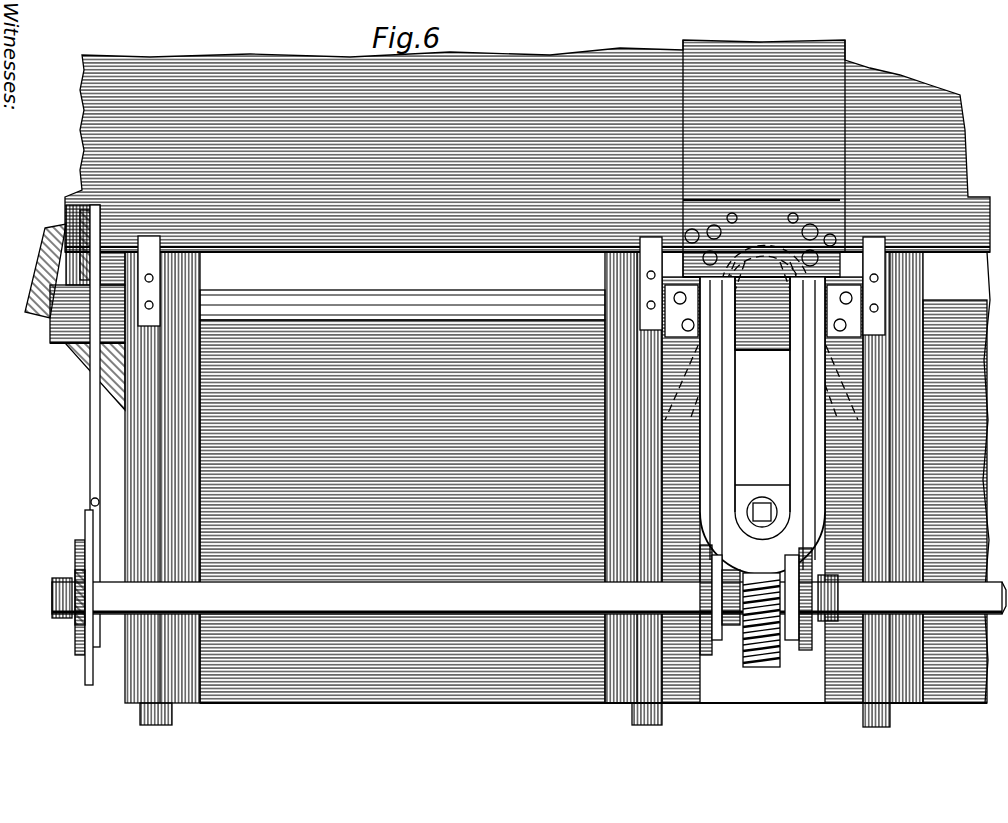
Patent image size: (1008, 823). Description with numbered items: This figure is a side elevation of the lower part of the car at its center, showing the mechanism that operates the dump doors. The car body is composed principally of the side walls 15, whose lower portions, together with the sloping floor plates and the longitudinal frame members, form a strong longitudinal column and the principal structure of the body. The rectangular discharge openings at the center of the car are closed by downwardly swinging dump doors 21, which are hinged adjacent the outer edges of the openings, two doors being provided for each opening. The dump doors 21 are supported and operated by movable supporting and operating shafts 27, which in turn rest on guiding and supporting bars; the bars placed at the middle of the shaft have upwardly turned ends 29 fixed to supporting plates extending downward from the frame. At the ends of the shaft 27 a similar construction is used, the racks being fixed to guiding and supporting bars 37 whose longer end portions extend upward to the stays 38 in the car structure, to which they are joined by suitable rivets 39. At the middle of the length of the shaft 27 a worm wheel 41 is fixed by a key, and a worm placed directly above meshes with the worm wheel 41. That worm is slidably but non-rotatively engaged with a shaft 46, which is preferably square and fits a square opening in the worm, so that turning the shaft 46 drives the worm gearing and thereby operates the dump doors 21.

The side wall 15 is at (761, 230).
The dump door 21 is at (402, 688).
The supporting and operating shaft 27 is at (527, 598).
The upwardly turned end 29 is at (722, 655).
The guiding and supporting bar 37 is at (92, 402).
The stay 38 is at (70, 240).
The rivet 39 is at (140, 212).
The worm wheel 41 is at (761, 668).
The shaft 46 is at (762, 497).